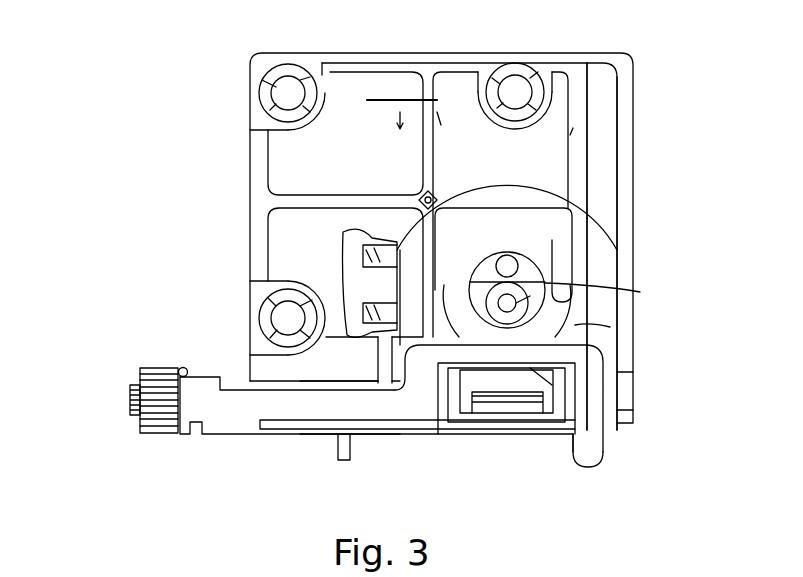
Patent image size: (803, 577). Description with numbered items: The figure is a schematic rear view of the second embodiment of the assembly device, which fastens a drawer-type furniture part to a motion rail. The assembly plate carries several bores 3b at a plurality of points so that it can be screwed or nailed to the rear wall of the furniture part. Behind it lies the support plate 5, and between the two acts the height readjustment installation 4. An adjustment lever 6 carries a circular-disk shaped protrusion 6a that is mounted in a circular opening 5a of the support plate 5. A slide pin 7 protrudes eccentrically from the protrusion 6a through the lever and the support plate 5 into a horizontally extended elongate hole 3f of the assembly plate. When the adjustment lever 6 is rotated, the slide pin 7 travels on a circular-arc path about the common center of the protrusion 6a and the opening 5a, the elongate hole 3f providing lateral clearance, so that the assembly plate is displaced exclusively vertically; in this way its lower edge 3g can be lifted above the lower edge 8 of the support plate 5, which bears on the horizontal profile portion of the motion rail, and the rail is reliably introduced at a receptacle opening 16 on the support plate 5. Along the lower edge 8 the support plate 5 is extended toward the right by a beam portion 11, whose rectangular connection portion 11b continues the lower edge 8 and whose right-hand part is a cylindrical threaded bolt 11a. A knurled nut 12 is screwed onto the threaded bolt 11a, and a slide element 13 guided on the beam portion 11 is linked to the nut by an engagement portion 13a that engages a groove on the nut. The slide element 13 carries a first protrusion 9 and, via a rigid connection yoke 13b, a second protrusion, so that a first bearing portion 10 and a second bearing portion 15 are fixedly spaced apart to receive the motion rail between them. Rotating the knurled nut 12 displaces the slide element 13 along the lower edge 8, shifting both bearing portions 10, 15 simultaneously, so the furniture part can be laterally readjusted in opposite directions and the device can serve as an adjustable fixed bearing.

The bores 3b is at (262, 86).
The elongate hole 3f is at (463, 294).
The lower edge of the assembly plate 3g is at (383, 437).
The height readjustment installation 4 is at (466, 183).
The support plate 5 is at (598, 212).
The circular opening 5a is at (487, 250).
The adjustment lever 6 is at (357, 268).
The protrusion 6a is at (530, 262).
The slide pin 7 is at (640, 292).
The lower edge of the support plate 8 is at (440, 435).
The first protrusion 9 is at (597, 443).
The first bearing portion 10 is at (573, 443).
The beam portion 11 is at (335, 447).
The threaded bolt 11a is at (128, 398).
The connection portion 11b is at (333, 380).
The knurled nut 12 is at (150, 367).
The slide element 13 is at (217, 427).
The engagement portion 13a is at (183, 363).
The connection yoke 13b is at (610, 327).
The second bearing portion 15 is at (352, 452).
The receptacle opening 16 is at (637, 381).